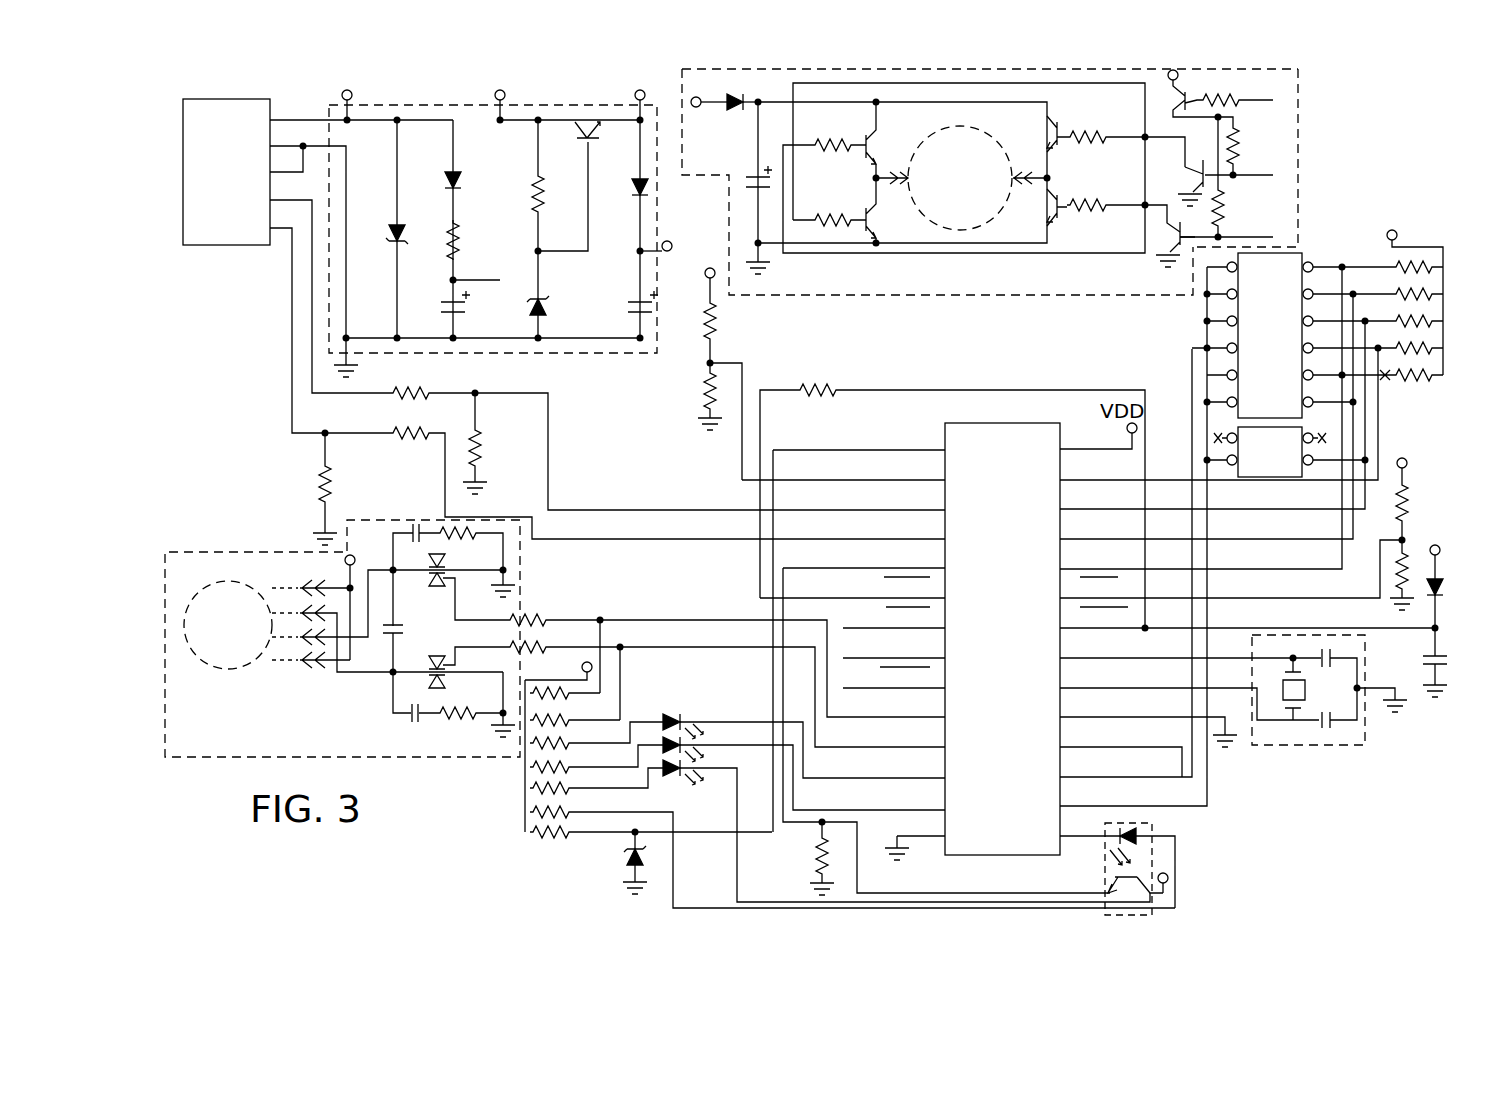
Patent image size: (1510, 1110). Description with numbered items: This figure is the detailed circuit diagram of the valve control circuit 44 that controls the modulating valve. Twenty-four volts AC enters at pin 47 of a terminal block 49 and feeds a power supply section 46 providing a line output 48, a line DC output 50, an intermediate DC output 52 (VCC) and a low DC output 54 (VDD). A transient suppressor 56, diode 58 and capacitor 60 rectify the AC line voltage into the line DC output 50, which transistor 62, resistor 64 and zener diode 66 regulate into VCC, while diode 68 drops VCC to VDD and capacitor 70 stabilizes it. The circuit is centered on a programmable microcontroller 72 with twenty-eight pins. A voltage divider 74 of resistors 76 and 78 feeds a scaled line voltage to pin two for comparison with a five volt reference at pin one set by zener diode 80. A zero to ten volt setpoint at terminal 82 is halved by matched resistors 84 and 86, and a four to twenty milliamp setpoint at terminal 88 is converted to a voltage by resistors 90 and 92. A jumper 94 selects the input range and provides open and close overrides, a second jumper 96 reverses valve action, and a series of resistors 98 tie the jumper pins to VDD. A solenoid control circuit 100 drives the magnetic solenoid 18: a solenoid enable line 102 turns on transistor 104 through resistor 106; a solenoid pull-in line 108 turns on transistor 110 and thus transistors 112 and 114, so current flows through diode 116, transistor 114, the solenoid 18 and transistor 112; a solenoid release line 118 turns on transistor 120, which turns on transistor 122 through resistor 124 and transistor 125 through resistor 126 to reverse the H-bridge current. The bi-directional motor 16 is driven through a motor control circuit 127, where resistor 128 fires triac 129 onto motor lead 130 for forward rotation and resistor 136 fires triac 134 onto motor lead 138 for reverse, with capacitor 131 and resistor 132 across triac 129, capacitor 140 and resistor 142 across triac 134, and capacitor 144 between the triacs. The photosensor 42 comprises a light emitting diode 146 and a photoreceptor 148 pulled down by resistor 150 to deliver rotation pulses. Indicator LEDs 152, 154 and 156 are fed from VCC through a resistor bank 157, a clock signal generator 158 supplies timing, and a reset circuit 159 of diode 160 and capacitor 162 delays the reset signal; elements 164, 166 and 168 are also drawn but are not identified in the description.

The bi-directional motor 16 is at (213, 668).
The magnetic solenoid 18 is at (968, 128).
The photosensor 42 is at (1105, 912).
The valve control circuit 44 is at (1406, 131).
The power supply section 46 is at (457, 95).
The pin 47 is at (283, 120).
The line output 48 is at (352, 92).
The terminal block 49 is at (205, 99).
The line DC output 50 is at (505, 93).
The intermediate DC output (VCC) 52 is at (636, 92).
The low DC output (VDD) 54 is at (667, 252).
The transient suppressor (varistor) 56 is at (390, 230).
The diode 58 is at (447, 180).
The capacitor 60 is at (447, 303).
The transistor 62 is at (591, 140).
The resistor 64 is at (542, 183).
The zener diode 66 is at (545, 300).
The diode 68 is at (636, 192).
The capacitor 70 is at (633, 304).
The programmable microcontroller 72 is at (1000, 425).
The voltage divider 74 is at (736, 366).
The resistor 76 is at (722, 322).
The resistor 78 is at (705, 395).
The zener diode 80 is at (625, 855).
The terminal 82 is at (310, 240).
The resistor 84 is at (395, 398).
The resistor 86 is at (480, 445).
The terminal 88 is at (290, 244).
The resistor 90 is at (322, 470).
The resistor 92 is at (405, 440).
The jumper 94 is at (1275, 262).
The second jumper 96 is at (1262, 432).
The series of resistors 98 is at (1457, 279).
The solenoid control circuit 100 is at (958, 67).
The solenoid enable line 102 is at (846, 690).
The transistor 104 is at (1175, 85).
The resistor 106 is at (1228, 100).
The solenoid pull-in line 108 is at (843, 627).
The transistor 110 is at (1160, 233).
The transistor 112 is at (1062, 200).
The transistor 114 is at (870, 142).
The diode 116 is at (743, 100).
The solenoid release line 118 is at (843, 657).
The transistor 120 is at (1195, 172).
The transistor 122 is at (872, 220).
The resistor 124 is at (815, 215).
The transistor 125 is at (1060, 130).
The resistor 126 is at (1105, 139).
The motor control circuit 127 is at (224, 769).
The resistor 128 is at (540, 618).
The triac 129 is at (432, 580).
The motor lead 130 is at (310, 662).
The capacitor 131 is at (414, 530).
The resistor 132 is at (450, 540).
The triac 134 is at (433, 667).
The resistor 136 is at (550, 645).
The motor lead 138 is at (300, 612).
The capacitor 140 is at (414, 720).
The resistor 142 is at (450, 720).
The capacitor 144 is at (392, 637).
The light emitting diode 146 is at (1140, 833).
The photoreceptor 148 is at (1150, 895).
The pull-down resistor 150 is at (815, 840).
The LED 152 is at (675, 716).
The LED 154 is at (665, 742).
The LED 156 is at (678, 778).
The resistor bank 157 is at (514, 808).
The clock signal generator 158 is at (1330, 745).
The reset circuit 159 is at (1459, 620).
The diode 160 is at (1441, 585).
The capacitor 162 is at (1423, 660).
The voltage divider 164 is at (1427, 516).
The resistor 166 is at (1408, 490).
The resistor 168 is at (1398, 565).